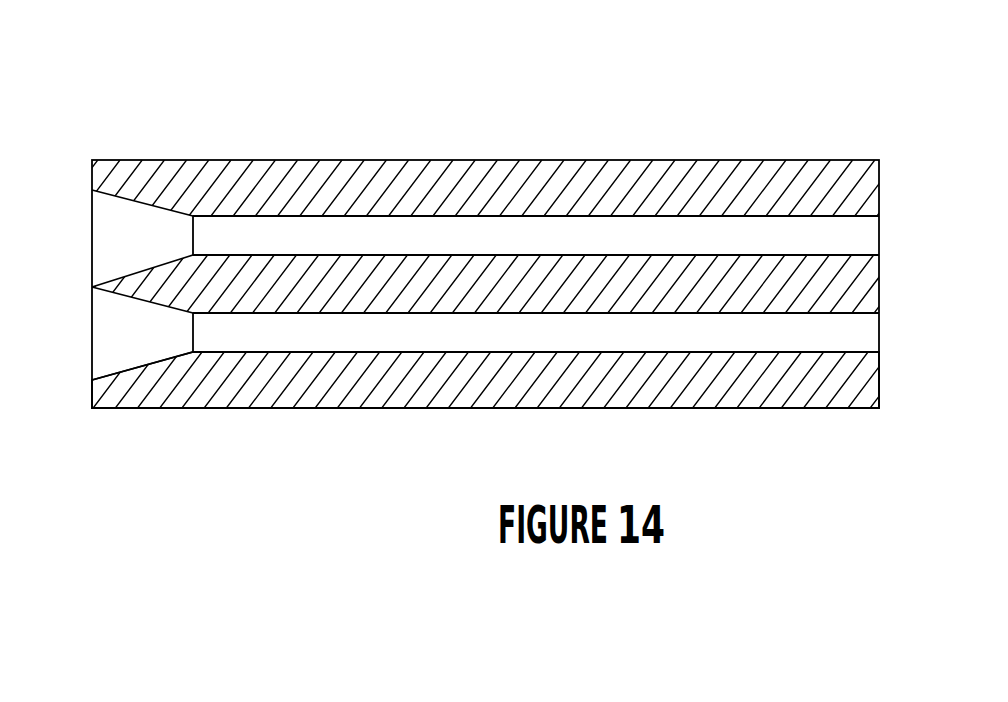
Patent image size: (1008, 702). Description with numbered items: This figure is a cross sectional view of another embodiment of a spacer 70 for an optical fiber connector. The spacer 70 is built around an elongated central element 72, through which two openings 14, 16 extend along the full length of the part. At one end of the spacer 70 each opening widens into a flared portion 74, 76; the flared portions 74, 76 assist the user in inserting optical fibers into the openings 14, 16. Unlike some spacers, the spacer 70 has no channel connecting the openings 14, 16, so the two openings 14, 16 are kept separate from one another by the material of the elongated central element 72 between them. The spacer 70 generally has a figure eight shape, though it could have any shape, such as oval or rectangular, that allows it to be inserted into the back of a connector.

The opening 14 is at (317, 233).
The opening 16 is at (275, 338).
The spacer 70 is at (472, 264).
The elongated central element 72 is at (413, 377).
The flared portion 74 is at (112, 222).
The flared portion 76 is at (92, 347).